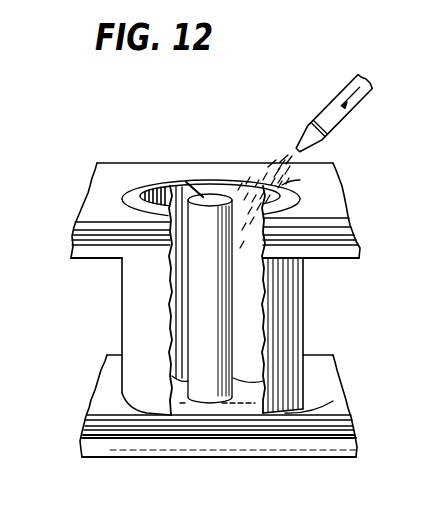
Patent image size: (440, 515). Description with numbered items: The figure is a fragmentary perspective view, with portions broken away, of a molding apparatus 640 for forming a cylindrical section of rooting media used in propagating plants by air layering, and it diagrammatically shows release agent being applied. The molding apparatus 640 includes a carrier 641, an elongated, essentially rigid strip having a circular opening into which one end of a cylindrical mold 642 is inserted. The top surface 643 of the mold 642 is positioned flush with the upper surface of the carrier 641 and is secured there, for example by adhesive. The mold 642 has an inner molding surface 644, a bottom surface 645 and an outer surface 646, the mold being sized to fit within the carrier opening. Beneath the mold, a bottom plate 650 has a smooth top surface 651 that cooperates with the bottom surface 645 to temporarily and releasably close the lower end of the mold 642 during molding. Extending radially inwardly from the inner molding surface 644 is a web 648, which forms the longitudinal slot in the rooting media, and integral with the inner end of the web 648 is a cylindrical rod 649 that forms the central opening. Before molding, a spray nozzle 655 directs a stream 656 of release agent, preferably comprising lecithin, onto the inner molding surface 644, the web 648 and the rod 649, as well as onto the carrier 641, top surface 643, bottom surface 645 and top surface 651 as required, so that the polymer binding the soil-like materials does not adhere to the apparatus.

The molding apparatus 640 is at (62, 111).
The carrier 641 is at (107, 210).
The cylindrical mold 642 is at (280, 320).
The top surface of the mold 643 is at (137, 195).
The inner molding surface 644 is at (167, 200).
The bottom surface of the mold 645 is at (322, 412).
The outer surface of the mold 646 is at (133, 310).
The web 648 is at (213, 196).
The cylindrical rod 649 is at (222, 187).
The bottom plate 650 is at (88, 450).
The top surface of the bottom plate 651 is at (118, 406).
The spray nozzle 655 is at (373, 99).
The stream of release agent 656 is at (287, 182).